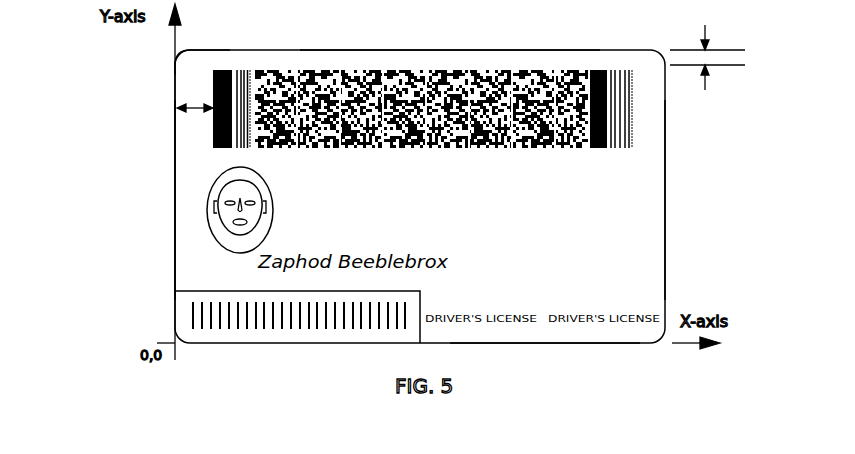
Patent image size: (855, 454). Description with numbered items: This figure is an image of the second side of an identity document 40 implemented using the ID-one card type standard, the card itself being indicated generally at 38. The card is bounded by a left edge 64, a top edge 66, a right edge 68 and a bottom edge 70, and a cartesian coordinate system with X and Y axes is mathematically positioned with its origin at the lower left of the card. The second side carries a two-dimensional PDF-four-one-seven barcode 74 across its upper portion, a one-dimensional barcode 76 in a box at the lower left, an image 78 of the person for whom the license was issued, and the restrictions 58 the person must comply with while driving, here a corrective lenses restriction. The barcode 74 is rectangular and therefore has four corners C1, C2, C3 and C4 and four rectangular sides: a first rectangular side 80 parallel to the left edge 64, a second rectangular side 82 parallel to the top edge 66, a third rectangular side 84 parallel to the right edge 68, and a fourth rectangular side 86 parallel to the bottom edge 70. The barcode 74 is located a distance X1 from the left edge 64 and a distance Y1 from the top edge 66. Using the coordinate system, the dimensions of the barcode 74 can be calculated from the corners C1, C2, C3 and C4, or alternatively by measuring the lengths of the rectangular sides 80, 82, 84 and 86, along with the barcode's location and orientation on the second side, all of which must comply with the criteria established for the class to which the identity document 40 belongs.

The identification document (card) 38 is at (52, 152).
The identity document 40 is at (175, 62).
The restrictions 58 is at (477, 178).
The left edge 64 is at (175, 264).
The top edge 66 is at (450, 50).
The right edge 68 is at (665, 251).
The bottom edge 70 is at (577, 343).
The PDF417 barcode 74 is at (632, 113).
The one-dimensional barcode 76 is at (240, 328).
The image of the person 78 is at (270, 196).
The first rectangular side 80 is at (213, 125).
The second rectangular side 82 is at (395, 70).
The third rectangular side 84 is at (632, 135).
The fourth rectangular side 86 is at (357, 148).
The first corner C1 is at (213, 148).
The second corner C2 is at (214, 70).
The third corner C3 is at (632, 70).
The fourth corner C4 is at (632, 148).
The distance from left edge X1 is at (195, 98).
The distance from top edge Y1 is at (707, 57).